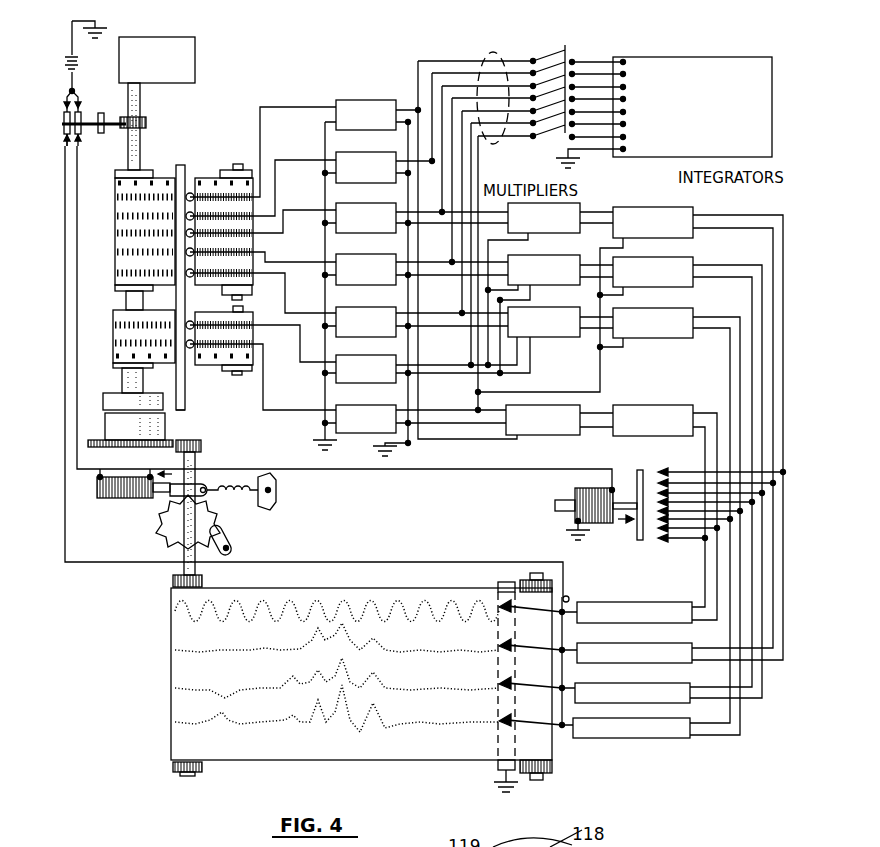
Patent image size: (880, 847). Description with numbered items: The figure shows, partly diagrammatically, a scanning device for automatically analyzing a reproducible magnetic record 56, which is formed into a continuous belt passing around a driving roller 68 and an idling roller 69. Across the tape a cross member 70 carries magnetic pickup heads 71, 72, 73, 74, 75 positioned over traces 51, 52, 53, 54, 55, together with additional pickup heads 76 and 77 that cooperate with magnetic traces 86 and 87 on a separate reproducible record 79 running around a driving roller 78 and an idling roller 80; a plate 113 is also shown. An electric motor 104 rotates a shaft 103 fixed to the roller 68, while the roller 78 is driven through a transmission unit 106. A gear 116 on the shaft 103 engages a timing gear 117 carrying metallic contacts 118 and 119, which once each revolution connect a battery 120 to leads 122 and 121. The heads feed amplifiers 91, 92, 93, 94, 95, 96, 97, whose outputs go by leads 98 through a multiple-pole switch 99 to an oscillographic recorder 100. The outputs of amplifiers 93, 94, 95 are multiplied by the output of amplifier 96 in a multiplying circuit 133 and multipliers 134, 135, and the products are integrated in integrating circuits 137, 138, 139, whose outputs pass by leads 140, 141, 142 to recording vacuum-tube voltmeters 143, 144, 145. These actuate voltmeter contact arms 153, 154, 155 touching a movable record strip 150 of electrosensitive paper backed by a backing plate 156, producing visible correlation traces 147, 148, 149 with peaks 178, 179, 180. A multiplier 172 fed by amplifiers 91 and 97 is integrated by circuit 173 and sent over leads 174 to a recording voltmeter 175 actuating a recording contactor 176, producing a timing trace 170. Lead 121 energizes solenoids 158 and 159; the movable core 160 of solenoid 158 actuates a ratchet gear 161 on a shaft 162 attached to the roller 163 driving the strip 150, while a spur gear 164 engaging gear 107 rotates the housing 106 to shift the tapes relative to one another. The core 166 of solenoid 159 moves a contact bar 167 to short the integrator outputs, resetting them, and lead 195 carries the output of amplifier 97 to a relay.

The electric motor 104 is at (145, 45).
The battery 120 is at (67, 62).
The metallic contact 118 is at (63, 118).
The timing gear 117 is at (105, 108).
The gear 116 is at (146, 118).
The metallic contact 119 is at (69, 138).
The shaft 103 is at (141, 138).
The lead 122 is at (65, 200).
The lead 121 is at (77, 233).
The driving roller 68 is at (126, 169).
The magnetic pickup head 71 is at (187, 194).
The reproducible record 56 is at (190, 165).
The magnetic pickup head 72 is at (192, 212).
The idling roller 69 is at (245, 168).
The trace 51 is at (117, 197).
The trace 52 is at (117, 216).
The trace 53 is at (117, 233).
The trace 54 is at (117, 253).
The trace 55 is at (117, 274).
The magnetic pickup head 73 is at (268, 252).
The magnetic pickup head 74 is at (272, 264).
The magnetic pickup head 75 is at (192, 278).
The pickup head 76 is at (187, 322).
The magnetic trace 86 is at (115, 324).
The magnetic trace 87 is at (115, 343).
The driving roller 78 is at (122, 376).
The pickup head 77 is at (192, 350).
The idling roller 80 is at (218, 366).
The reproducible record 79 is at (213, 370).
The plate 113 is at (103, 401).
The cross member 70 is at (183, 402).
The transmission unit 106 is at (152, 436).
The gear 107 is at (160, 448).
The spur gear 164 is at (203, 444).
The solenoid 158 is at (110, 500).
The movable core 160 is at (160, 497).
The ratchet gear 161 is at (165, 535).
The shaft 162 is at (208, 532).
The roller 163 is at (205, 580).
The timing trace 170 is at (190, 614).
The visible trace 147 is at (185, 650).
The visible trace 148 is at (185, 688).
The visible trace 149 is at (185, 722).
The peak 178 is at (342, 626).
The peak 179 is at (344, 660).
The peak 180 is at (345, 690).
The movable record strip 150 is at (307, 760).
The backing plate 156 is at (498, 768).
The recording contactor 176 is at (519, 609).
The voltmeter contact arm 153 is at (519, 648).
The voltmeter contact arm 154 is at (519, 686).
The voltmeter contact arm 155 is at (519, 723).
The amplifier 91 is at (380, 100).
The amplifier 92 is at (382, 153).
The amplifier 93 is at (380, 205).
The amplifier 94 is at (380, 258).
The amplifier 95 is at (380, 310).
The amplifier 96 is at (380, 358).
The amplifier 97 is at (380, 405).
The leads 98 is at (490, 143).
The multiple-pole switch 99 is at (550, 57).
The recorder 100 is at (745, 134).
The multiplying circuit 133 is at (580, 230).
The multiplier 134 is at (580, 280).
The multiplier 135 is at (538, 338).
The integrating circuit 137 is at (678, 211).
The integrating circuit 138 is at (680, 268).
The integrating circuit 139 is at (680, 320).
The lead 140 is at (782, 250).
The lead 141 is at (757, 300).
The lead 142 is at (733, 376).
The lead 195 is at (600, 389).
The multiplier 172 is at (580, 438).
The integrating circuit 173 is at (680, 412).
The leads 174 is at (708, 455).
The solenoid 159 is at (575, 493).
The core 166 is at (565, 511).
The contact bar 167 is at (637, 545).
The recording voltmeter 175 is at (647, 603).
The recording vacuum-tube voltmeter 143 is at (648, 646).
The recording vacuum-tube voltmeter 144 is at (628, 679).
The recording vacuum-tube voltmeter 145 is at (638, 738).